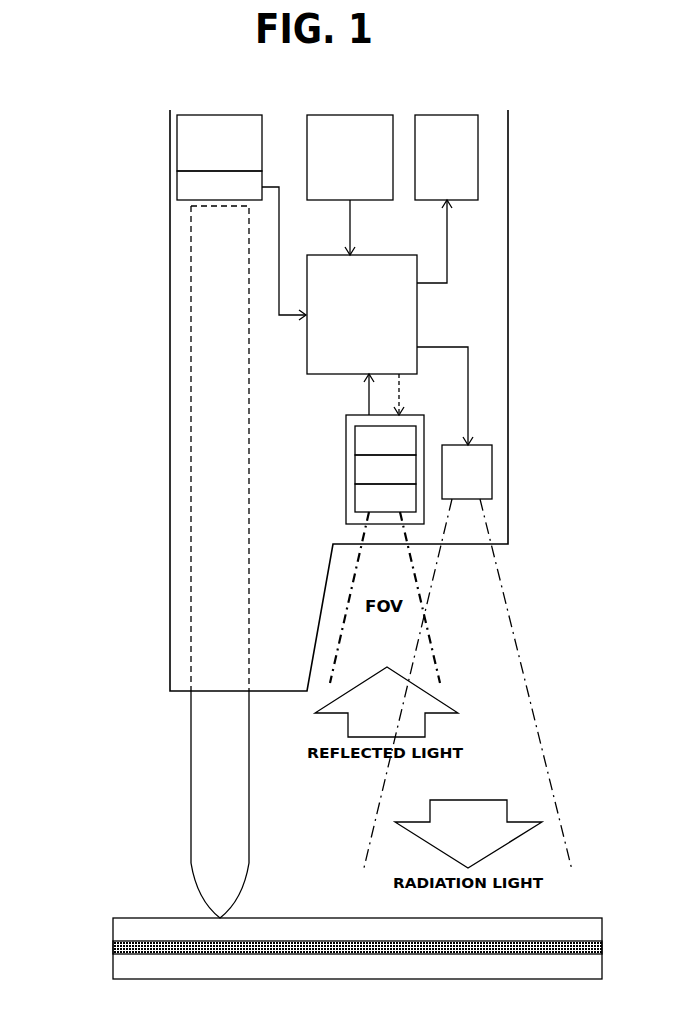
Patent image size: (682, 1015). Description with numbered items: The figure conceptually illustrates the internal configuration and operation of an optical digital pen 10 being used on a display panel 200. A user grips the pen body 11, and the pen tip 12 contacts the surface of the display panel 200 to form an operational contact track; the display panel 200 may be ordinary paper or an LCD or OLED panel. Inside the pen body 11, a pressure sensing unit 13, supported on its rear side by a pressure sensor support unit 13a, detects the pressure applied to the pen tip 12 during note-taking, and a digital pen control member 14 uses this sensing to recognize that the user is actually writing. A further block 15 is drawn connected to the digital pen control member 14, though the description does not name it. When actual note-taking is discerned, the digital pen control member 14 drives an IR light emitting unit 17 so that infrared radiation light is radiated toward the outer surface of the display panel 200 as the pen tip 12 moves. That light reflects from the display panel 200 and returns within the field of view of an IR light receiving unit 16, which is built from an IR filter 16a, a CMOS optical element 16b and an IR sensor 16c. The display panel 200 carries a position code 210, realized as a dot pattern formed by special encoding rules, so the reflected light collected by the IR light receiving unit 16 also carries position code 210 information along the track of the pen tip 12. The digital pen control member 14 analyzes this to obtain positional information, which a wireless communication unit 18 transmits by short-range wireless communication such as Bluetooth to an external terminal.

The optical digital pen 10 is at (160, 193).
The pen body 11 is at (170, 563).
The pen tip 12 is at (194, 877).
The pressure sensing unit 13 is at (241, 245).
The pressure sensor support unit 13a is at (219, 143).
The digital pen control member 14 is at (362, 335).
The input unit 15 is at (350, 185).
The IR light receiving unit 16 is at (365, 549).
The IR filter 16a is at (385, 440).
The CMOS optical element 16b is at (385, 469).
The IR sensor 16c is at (385, 498).
The IR light emitting unit 17 is at (467, 609).
The wireless communication unit 18 is at (446, 199).
The display panel 200 is at (113, 915).
The position code 210 is at (113, 949).